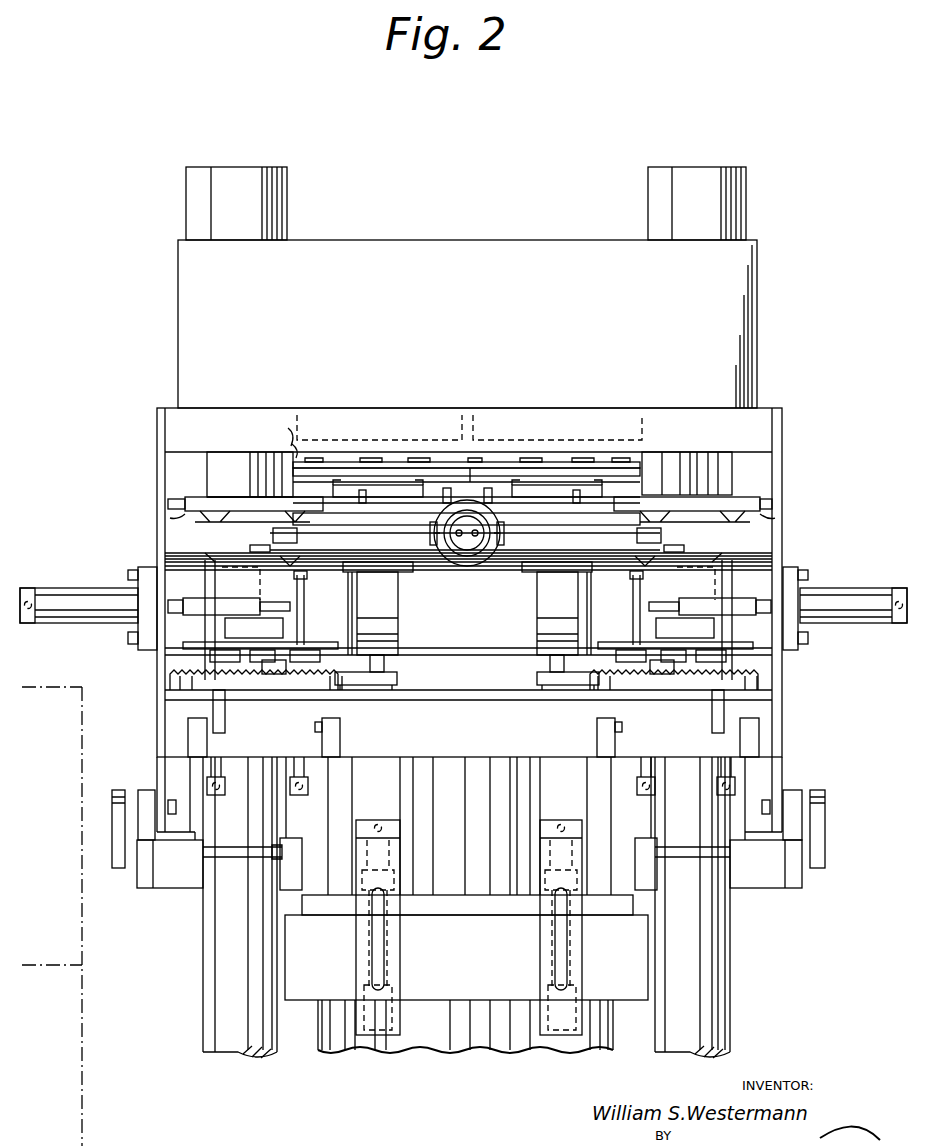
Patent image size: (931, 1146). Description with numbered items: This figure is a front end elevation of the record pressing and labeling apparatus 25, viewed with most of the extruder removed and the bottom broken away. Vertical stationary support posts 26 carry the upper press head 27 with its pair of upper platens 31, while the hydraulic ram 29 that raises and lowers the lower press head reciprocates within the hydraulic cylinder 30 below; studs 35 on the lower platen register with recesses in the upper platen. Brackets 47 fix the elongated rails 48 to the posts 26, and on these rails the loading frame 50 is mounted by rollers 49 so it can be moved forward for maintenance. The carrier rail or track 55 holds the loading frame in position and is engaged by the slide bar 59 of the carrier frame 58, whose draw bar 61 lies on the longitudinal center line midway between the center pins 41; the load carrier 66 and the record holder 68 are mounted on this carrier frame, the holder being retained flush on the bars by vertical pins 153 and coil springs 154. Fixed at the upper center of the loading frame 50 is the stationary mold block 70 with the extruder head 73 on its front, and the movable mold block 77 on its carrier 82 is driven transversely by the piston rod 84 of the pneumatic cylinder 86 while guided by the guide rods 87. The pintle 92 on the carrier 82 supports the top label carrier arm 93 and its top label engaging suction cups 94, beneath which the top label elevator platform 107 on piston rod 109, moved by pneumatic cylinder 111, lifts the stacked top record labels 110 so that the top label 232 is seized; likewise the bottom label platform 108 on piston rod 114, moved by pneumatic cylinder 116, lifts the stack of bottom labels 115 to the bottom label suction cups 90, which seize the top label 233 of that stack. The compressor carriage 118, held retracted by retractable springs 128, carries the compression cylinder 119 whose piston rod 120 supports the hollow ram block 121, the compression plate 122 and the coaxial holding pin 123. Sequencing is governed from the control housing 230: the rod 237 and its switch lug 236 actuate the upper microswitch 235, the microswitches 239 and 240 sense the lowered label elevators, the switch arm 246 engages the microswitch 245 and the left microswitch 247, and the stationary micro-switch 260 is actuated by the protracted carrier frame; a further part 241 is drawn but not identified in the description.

The apparatus 25 is at (789, 303).
The vertical stationary support posts 26 is at (250, 1010).
The upper press head 27 is at (553, 350).
The hydraulic ram 29 is at (453, 838).
The hydraulic cylinder 30 is at (478, 1052).
The upper platens 31 is at (304, 409).
The studs 35 is at (443, 499).
The center pins 41 is at (359, 499).
The brackets 47 is at (188, 880).
The elongated rails 48 is at (125, 862).
The rollers 49 is at (120, 790).
The loading frame 50 is at (786, 464).
The carrier rail or track 55 is at (276, 487).
The carrier frame 58 is at (321, 463).
The slide bar 59 is at (276, 468).
The draw bar 61 is at (492, 468).
The load carrier 66 is at (373, 475).
The record holder 68 is at (448, 458).
The stationary mold block 70 is at (441, 560).
The extruder head 73 is at (456, 567).
The movable mold block 77 is at (467, 535).
The carrier 82 is at (262, 541).
The piston rod 84 is at (469, 619).
The pneumatic cylinder 86 is at (78, 608).
The guide rods 87 is at (165, 557).
The bottom label suction cups 90 is at (296, 576).
The pintle 92 is at (745, 513).
The top label carrier arm 93 is at (198, 500).
The top label engaging suction cups 94 is at (195, 513).
The top label elevator platform 107 is at (469, 607).
The bottom label platform 108 is at (342, 690).
The piston rod 109 is at (468, 620).
The stacked top record labels 110 is at (128, 586).
The pneumatic cylinder 111 is at (228, 796).
The piston rod 114 is at (348, 599).
The stack of bottom labels 115 is at (390, 634).
The pneumatic cylinder 116 is at (300, 796).
The compressor carriage 118 is at (395, 698).
The compression cylinder 119 is at (545, 793).
The piston rod 120 is at (384, 667).
The hollow ram block 121 is at (390, 618).
The ram head or compression plate 122 is at (454, 571).
The holding pin 123 is at (467, 608).
The retractable springs 128 is at (469, 729).
The vertical pins 153 is at (288, 436).
The coil spring 154 is at (286, 452).
The control housing 230 is at (84, 1141).
The top label 232 is at (212, 556).
The top label of bottom stack 233 is at (280, 560).
The upper microswitch 235 is at (540, 870).
The switch lug 236 is at (400, 982).
The rod 237 is at (400, 945).
The microswitch 239 is at (262, 690).
The microswitch 240 is at (278, 690).
The base block 241 is at (540, 1025).
The microswitch 245 is at (341, 740).
The switch arm 246 is at (225, 734).
The left microswitch 247 is at (200, 760).
The stationary micro-switch 260 is at (672, 462).